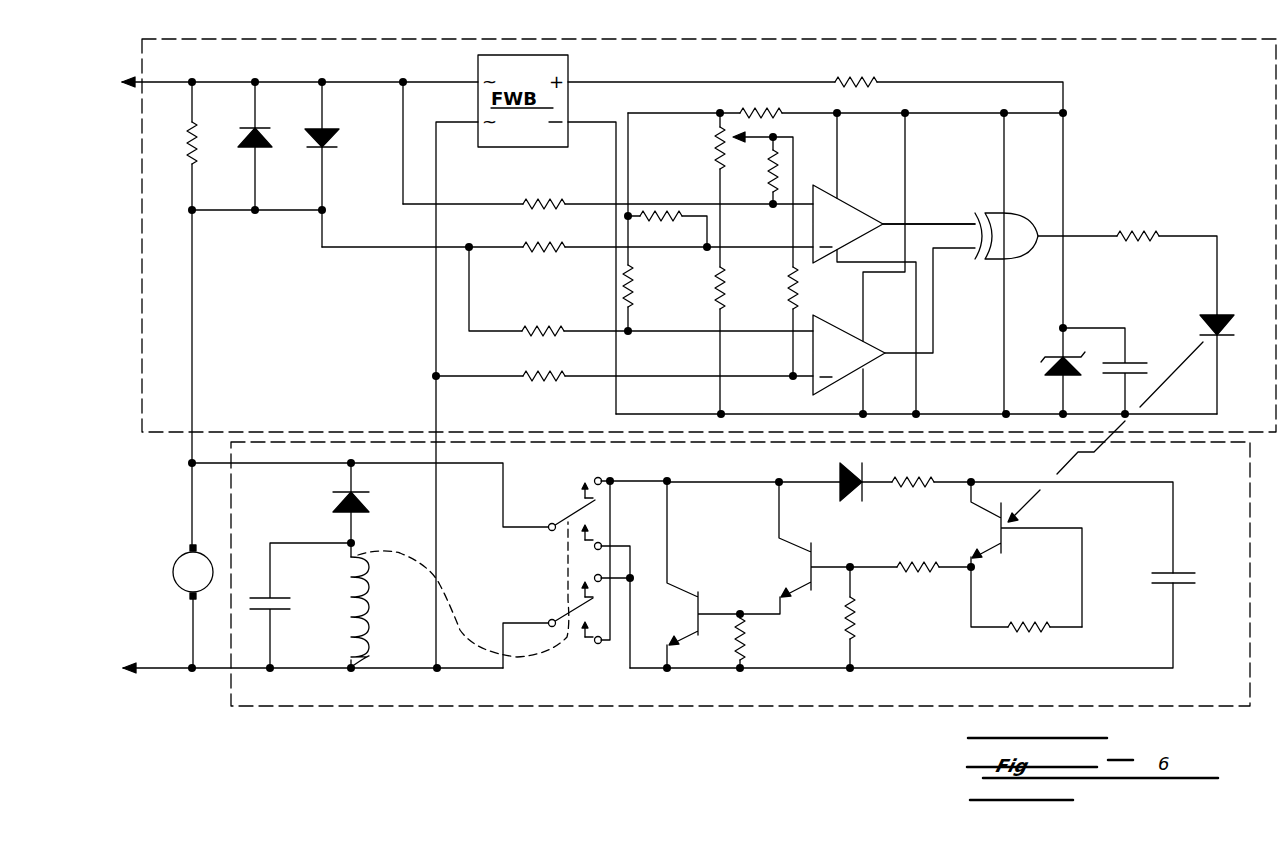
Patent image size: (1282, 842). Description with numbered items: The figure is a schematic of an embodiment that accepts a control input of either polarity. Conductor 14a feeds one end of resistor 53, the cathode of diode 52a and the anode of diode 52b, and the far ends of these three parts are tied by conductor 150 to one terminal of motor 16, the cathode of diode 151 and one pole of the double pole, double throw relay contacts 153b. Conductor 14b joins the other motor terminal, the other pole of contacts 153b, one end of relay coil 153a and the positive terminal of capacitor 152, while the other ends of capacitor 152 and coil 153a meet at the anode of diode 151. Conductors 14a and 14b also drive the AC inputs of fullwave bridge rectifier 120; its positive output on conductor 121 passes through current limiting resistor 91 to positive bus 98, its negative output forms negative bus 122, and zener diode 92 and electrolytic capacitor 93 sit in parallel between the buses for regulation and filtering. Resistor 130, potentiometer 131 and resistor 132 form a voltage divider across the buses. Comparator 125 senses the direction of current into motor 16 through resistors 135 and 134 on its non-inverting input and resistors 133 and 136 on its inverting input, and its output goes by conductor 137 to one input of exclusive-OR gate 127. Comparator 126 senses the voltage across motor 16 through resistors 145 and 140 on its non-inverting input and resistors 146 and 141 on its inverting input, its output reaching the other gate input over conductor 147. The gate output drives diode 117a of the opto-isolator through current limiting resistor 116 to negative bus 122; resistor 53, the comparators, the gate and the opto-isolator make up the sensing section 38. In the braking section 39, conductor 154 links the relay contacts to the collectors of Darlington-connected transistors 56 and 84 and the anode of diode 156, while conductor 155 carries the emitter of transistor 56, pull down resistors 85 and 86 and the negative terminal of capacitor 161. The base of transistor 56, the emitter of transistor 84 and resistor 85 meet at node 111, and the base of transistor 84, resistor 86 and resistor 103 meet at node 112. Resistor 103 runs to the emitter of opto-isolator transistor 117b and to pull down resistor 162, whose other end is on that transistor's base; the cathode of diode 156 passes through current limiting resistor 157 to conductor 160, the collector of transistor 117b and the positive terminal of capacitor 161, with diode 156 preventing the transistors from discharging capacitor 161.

The conductor 14a is at (162, 82).
The conductor 14b is at (186, 666).
The motor 16 is at (174, 562).
The sensing section 38 is at (1276, 184).
The braking section 39 is at (1250, 525).
The diode 52a is at (250, 131).
The diode 52b is at (330, 128).
The resistor 53 is at (196, 148).
The transistor 56 is at (690, 614).
The transistor 84 is at (804, 568).
The resistor 85 is at (745, 646).
The resistor 86 is at (848, 646).
The current limiting resistor 91 is at (858, 63).
The zener diode 92 is at (1052, 355).
The electrolytic capacitor 93 is at (1110, 378).
The positive bus 98 is at (1063, 184).
The resistor 103 is at (926, 564).
The junction 111 is at (722, 616).
The node 112 is at (858, 548).
The current limiting resistor 116 is at (1148, 230).
The diode of opto-isolator 117a is at (1222, 316).
The transistor of opto-isolator 117b is at (1004, 549).
The fullwave bridge rectifier 120 is at (473, 80).
The positive supply line 121 is at (710, 82).
The negative bus 122 is at (582, 122).
The comparator 125 is at (846, 184).
The comparator 126 is at (858, 320).
The exclusive-OR gate 127 is at (1040, 208).
The resistor 130 is at (748, 112).
The potentiometer 131 is at (712, 152).
The resistor 132 is at (714, 304).
The resistor 133 is at (686, 218).
The resistor 134 is at (754, 170).
The resistor 135 is at (553, 202).
The resistor 136 is at (553, 244).
The conductor 137 is at (922, 220).
The resistor 140 is at (640, 262).
The resistor 141 is at (789, 304).
The resistor 145 is at (554, 328).
The resistor 146 is at (554, 372).
The conductor 147 is at (936, 354).
The conductor 150 is at (192, 370).
The diode 151 is at (372, 500).
The capacitor 152 is at (277, 608).
The relay coil 153a is at (362, 606).
The relay contacts 153b is at (562, 516).
The conductor 154 is at (640, 465).
The conductor 155 is at (640, 672).
The diode 156 is at (835, 478).
The current limiting resistor 157 is at (896, 466).
The conductor 160 is at (990, 480).
The capacitor 161 is at (1178, 584).
The pull down resistor 162 is at (1020, 634).